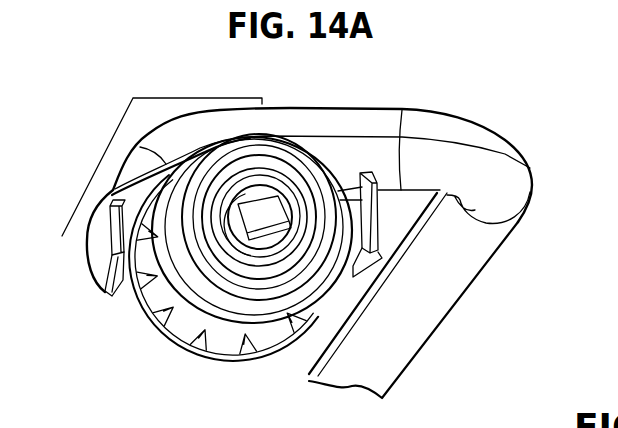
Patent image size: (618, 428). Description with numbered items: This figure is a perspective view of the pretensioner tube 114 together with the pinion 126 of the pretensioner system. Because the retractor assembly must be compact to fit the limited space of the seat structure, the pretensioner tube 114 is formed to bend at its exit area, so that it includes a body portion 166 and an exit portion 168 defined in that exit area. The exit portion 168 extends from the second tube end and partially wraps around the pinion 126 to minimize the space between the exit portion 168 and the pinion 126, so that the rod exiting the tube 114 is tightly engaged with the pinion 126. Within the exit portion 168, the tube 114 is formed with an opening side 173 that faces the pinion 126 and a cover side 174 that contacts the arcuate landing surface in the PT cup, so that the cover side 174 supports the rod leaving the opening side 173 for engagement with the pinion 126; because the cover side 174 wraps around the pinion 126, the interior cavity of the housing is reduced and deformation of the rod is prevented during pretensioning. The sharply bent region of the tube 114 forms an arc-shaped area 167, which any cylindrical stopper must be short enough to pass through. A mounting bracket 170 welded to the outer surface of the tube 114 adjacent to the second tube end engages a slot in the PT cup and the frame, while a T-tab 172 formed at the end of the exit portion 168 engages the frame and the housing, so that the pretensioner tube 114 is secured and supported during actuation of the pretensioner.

The pretensioner tube 114 is at (416, 337).
The pinion 126 is at (255, 297).
The body portion 166 is at (432, 130).
The arc-shaped area 167 is at (536, 160).
The exit portion 168 is at (133, 98).
The mounting bracket 170 is at (377, 226).
The T-tab 172 is at (103, 268).
The opening side 173 is at (149, 188).
The cover side 174 is at (149, 133).